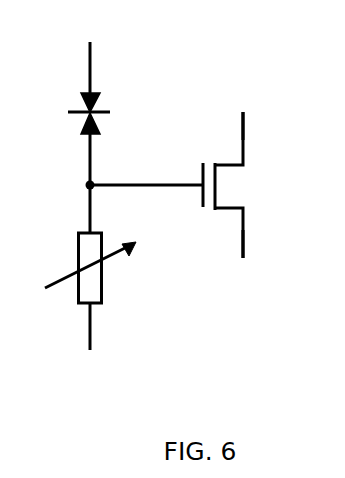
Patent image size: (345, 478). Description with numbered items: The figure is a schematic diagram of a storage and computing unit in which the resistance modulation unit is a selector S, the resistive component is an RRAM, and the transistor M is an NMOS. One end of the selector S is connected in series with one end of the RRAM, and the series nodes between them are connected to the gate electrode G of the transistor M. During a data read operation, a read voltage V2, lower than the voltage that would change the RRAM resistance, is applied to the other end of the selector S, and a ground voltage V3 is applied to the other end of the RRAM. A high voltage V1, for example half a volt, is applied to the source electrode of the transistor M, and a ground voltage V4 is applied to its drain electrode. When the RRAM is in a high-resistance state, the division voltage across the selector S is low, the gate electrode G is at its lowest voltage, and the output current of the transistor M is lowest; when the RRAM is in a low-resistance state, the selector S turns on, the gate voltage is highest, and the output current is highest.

The read voltage V2 is at (90, 55).
The selector S is at (105, 139).
The gate electrode G is at (145, 174).
The transistor M is at (242, 185).
The high voltage V1 is at (243, 112).
The ground voltage V4 is at (243, 261).
The ground voltage V3 is at (90, 281).